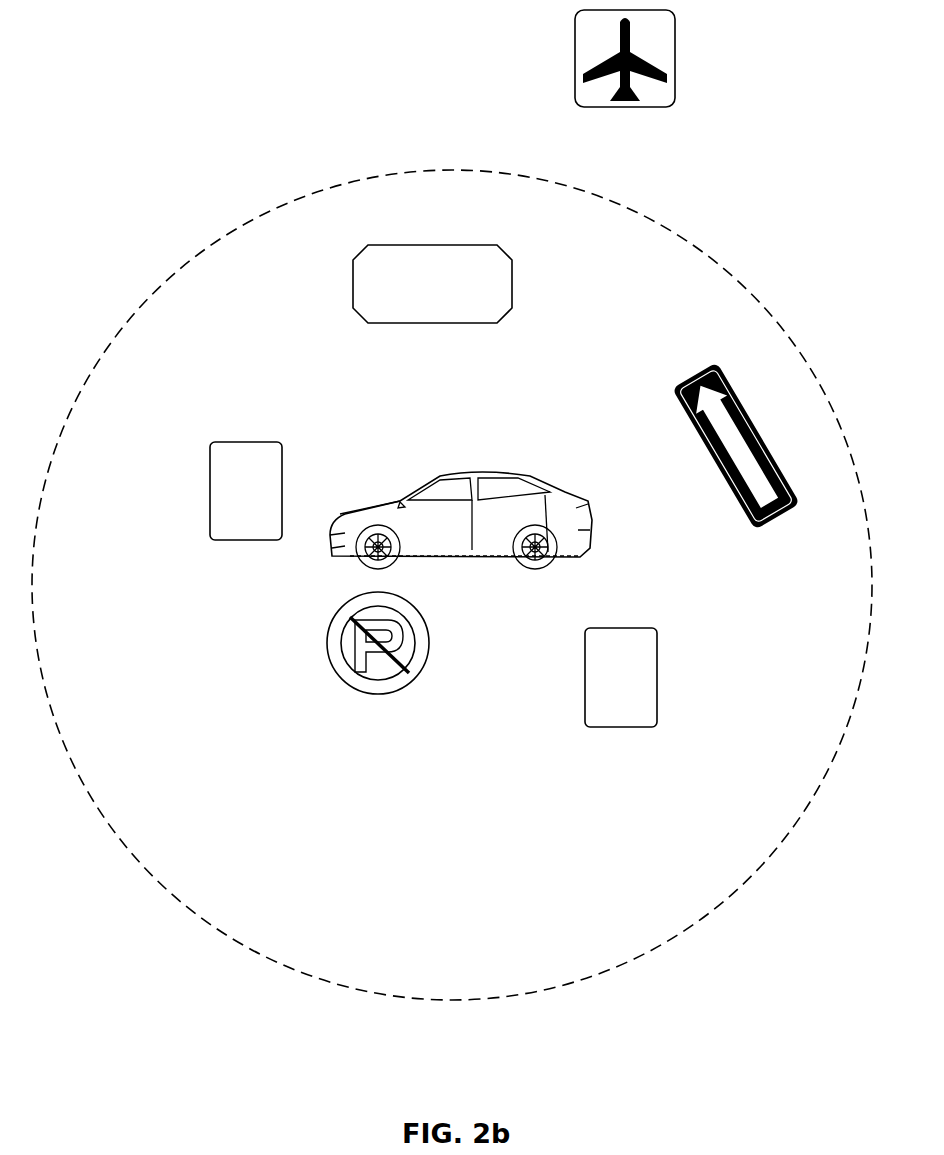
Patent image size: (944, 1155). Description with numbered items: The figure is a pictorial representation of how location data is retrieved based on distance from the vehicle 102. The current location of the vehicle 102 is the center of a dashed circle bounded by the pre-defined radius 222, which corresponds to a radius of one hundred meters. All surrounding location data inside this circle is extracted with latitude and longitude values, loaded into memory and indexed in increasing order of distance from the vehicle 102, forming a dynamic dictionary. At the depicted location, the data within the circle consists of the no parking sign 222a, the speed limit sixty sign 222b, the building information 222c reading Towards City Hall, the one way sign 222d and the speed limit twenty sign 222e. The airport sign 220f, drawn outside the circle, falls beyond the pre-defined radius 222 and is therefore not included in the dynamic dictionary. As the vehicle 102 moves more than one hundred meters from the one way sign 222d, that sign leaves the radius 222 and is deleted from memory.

The pre-defined radius 222 is at (290, 186).
The airport sign 220f is at (682, 58).
The building information 222c is at (432, 331).
The speed limit 60 sign 222b is at (208, 493).
The one way sign 222d is at (710, 446).
The vehicle 102 is at (512, 524).
The no parking sign 222a is at (378, 692).
The speed limit 20 sign 222e is at (583, 695).